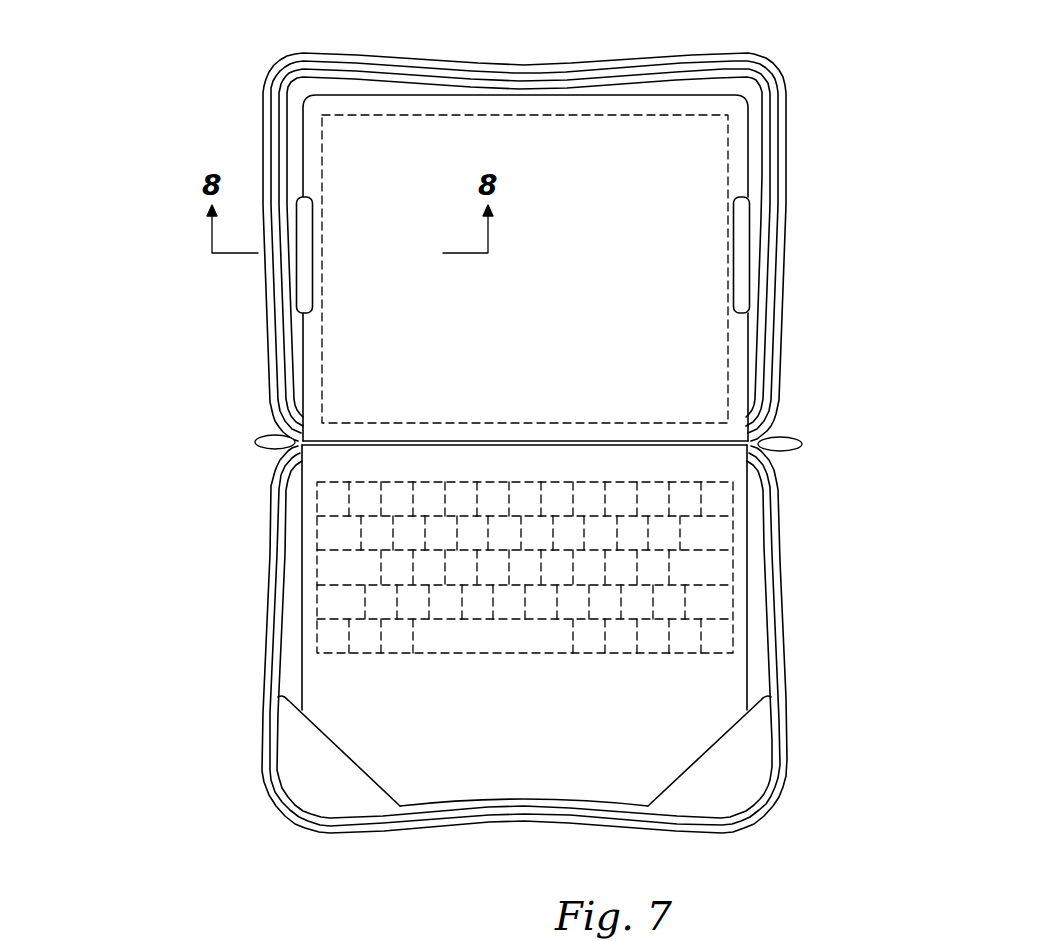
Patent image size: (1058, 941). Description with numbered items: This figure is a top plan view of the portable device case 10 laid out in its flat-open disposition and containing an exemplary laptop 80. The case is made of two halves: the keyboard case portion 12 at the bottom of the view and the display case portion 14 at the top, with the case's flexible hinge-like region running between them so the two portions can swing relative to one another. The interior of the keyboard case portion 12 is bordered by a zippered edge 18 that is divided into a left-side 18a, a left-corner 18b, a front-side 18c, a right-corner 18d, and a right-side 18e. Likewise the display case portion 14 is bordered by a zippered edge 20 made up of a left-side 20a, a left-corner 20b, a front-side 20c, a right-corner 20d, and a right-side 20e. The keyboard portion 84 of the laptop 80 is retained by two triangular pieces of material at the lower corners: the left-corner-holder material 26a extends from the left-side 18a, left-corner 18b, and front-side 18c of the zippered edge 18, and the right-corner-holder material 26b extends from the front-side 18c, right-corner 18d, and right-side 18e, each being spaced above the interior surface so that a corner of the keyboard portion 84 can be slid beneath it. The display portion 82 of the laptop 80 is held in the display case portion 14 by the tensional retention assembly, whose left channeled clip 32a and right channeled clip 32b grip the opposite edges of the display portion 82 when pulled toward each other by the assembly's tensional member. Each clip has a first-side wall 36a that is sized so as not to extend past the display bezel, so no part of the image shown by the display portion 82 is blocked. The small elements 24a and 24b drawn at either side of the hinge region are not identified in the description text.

The portable device case 10 is at (136, 94).
The keyboard case portion 12 is at (855, 530).
The display case portion 14 is at (856, 377).
The zippered edge 18 is at (272, 613).
The left-side 18a is at (278, 540).
The left-corner 18b is at (275, 830).
The front-side 18c is at (425, 820).
The right-corner 18d is at (778, 826).
The right-side 18e is at (777, 633).
The zippered edge 20 is at (780, 160).
The left-side 20a is at (280, 350).
The left-corner 20b is at (280, 75).
The front-side 20c is at (492, 68).
The right-corner 20d is at (778, 100).
The right-side 20e is at (778, 313).
The left hinge 24a is at (255, 443).
The right hinge 24b is at (797, 438).
The left-corner-holder material 26a is at (290, 765).
The right-corner-holder material 26b is at (762, 748).
The left channeled clip 32a is at (332, 249).
The right channeled clip 32b is at (719, 226).
The first-side wall 36a is at (300, 293).
The exemplary laptop 80 is at (505, 772).
The display portion 82 is at (560, 342).
The keyboard portion 84 is at (622, 725).